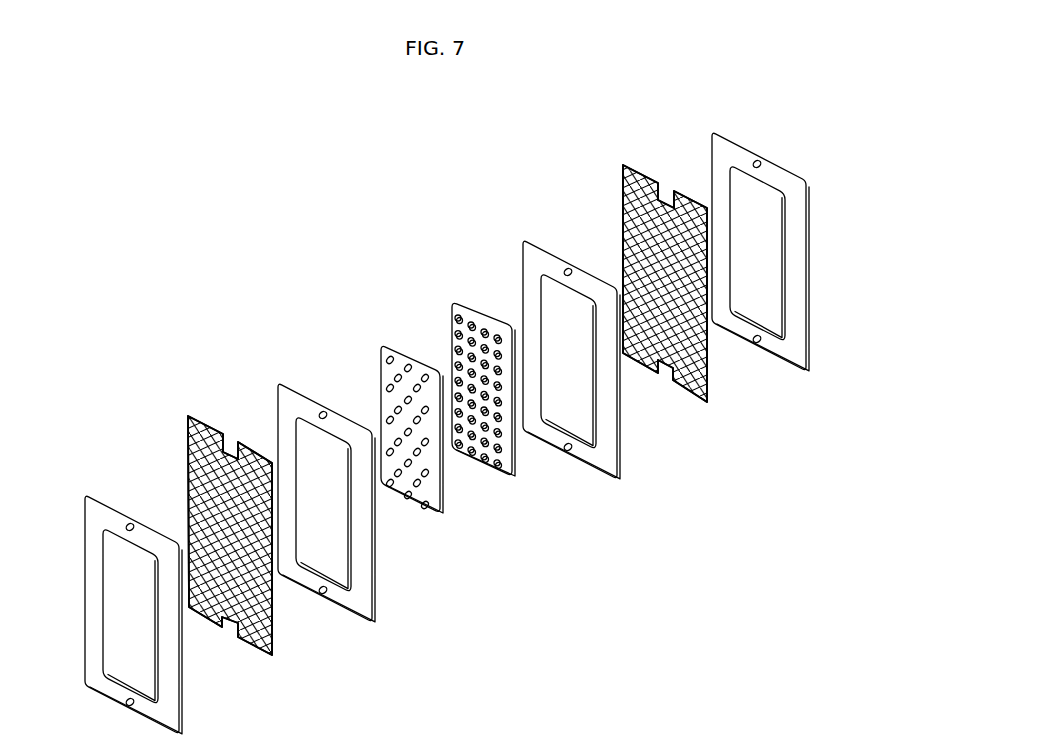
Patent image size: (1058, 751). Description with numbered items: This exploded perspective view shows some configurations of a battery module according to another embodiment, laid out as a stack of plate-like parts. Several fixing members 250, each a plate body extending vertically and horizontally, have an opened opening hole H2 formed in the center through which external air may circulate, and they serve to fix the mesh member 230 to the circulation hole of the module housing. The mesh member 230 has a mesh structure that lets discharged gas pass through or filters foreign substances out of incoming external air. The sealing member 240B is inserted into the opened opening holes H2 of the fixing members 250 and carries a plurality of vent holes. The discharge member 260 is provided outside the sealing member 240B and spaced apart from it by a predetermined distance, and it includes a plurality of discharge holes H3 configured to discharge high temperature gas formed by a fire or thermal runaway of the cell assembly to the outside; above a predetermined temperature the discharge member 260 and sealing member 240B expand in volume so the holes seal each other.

The fixing member 250 is at (436, 406).
The mesh member 230 is at (190, 416).
The discharge member 260 is at (384, 399).
The sealing member 240B is at (463, 301).
The opening hole H2 is at (750, 216).
The discharge hole H3 is at (405, 367).